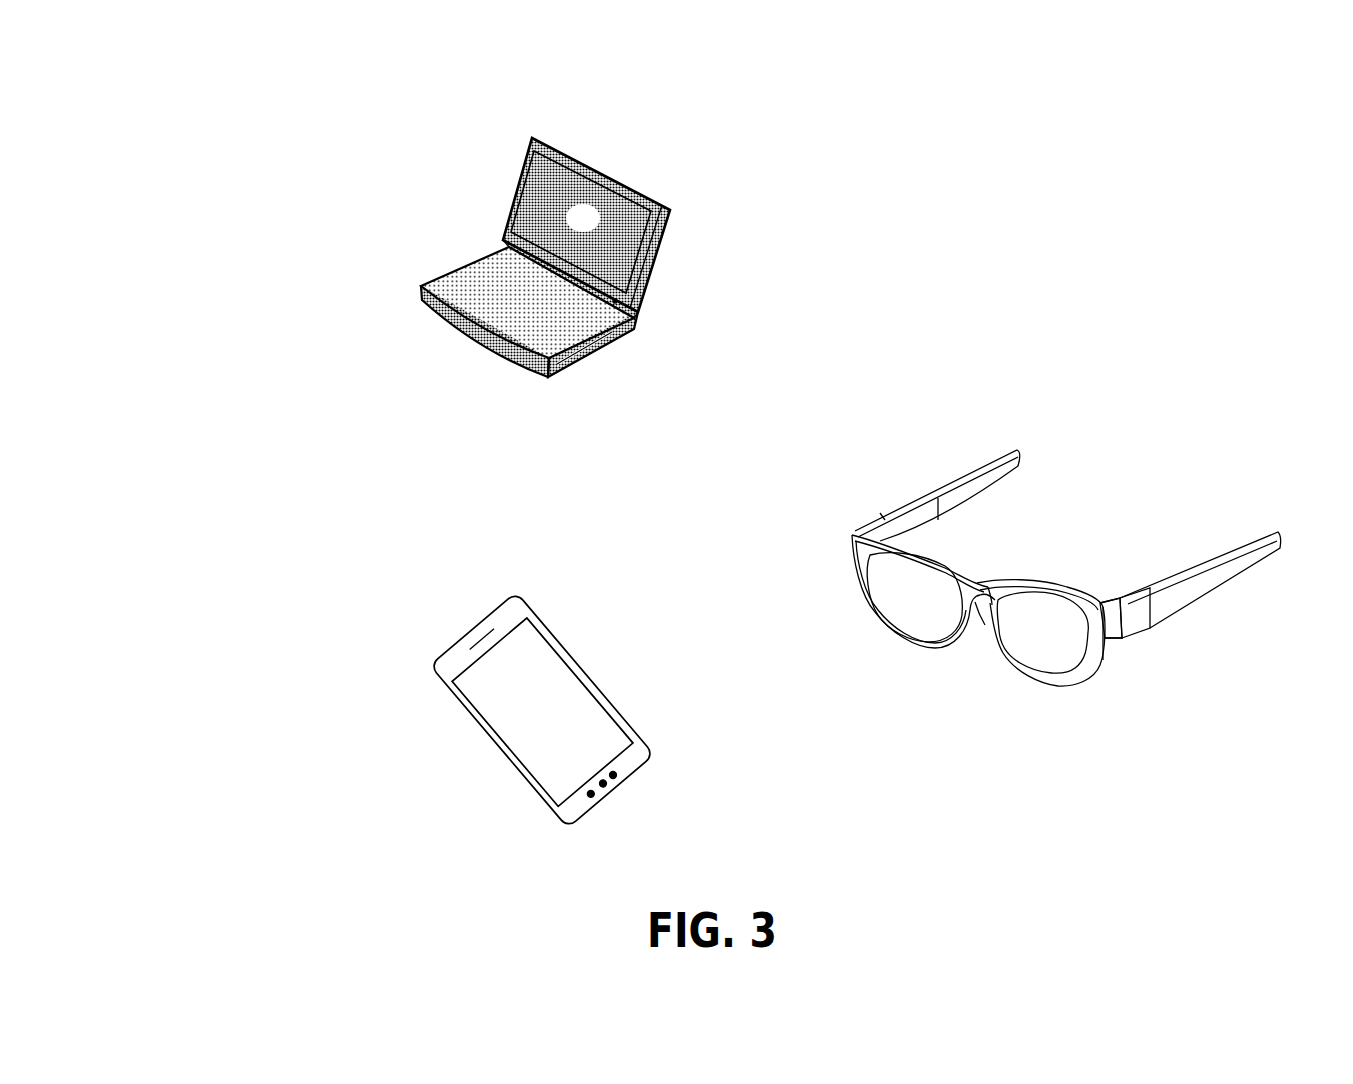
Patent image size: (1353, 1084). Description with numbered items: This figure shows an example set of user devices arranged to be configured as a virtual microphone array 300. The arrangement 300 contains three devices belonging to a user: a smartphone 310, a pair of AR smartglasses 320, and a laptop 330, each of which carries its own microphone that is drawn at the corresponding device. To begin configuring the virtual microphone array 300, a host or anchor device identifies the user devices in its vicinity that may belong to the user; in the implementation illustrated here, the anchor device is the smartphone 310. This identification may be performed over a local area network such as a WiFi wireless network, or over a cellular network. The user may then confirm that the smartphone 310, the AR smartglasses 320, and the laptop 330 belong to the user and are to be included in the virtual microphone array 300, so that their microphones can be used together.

The virtual microphone array 300 is at (314, 153).
The smartphone 310 is at (470, 619).
The AR smartglasses 320 is at (951, 479).
The laptop 330 is at (647, 209).